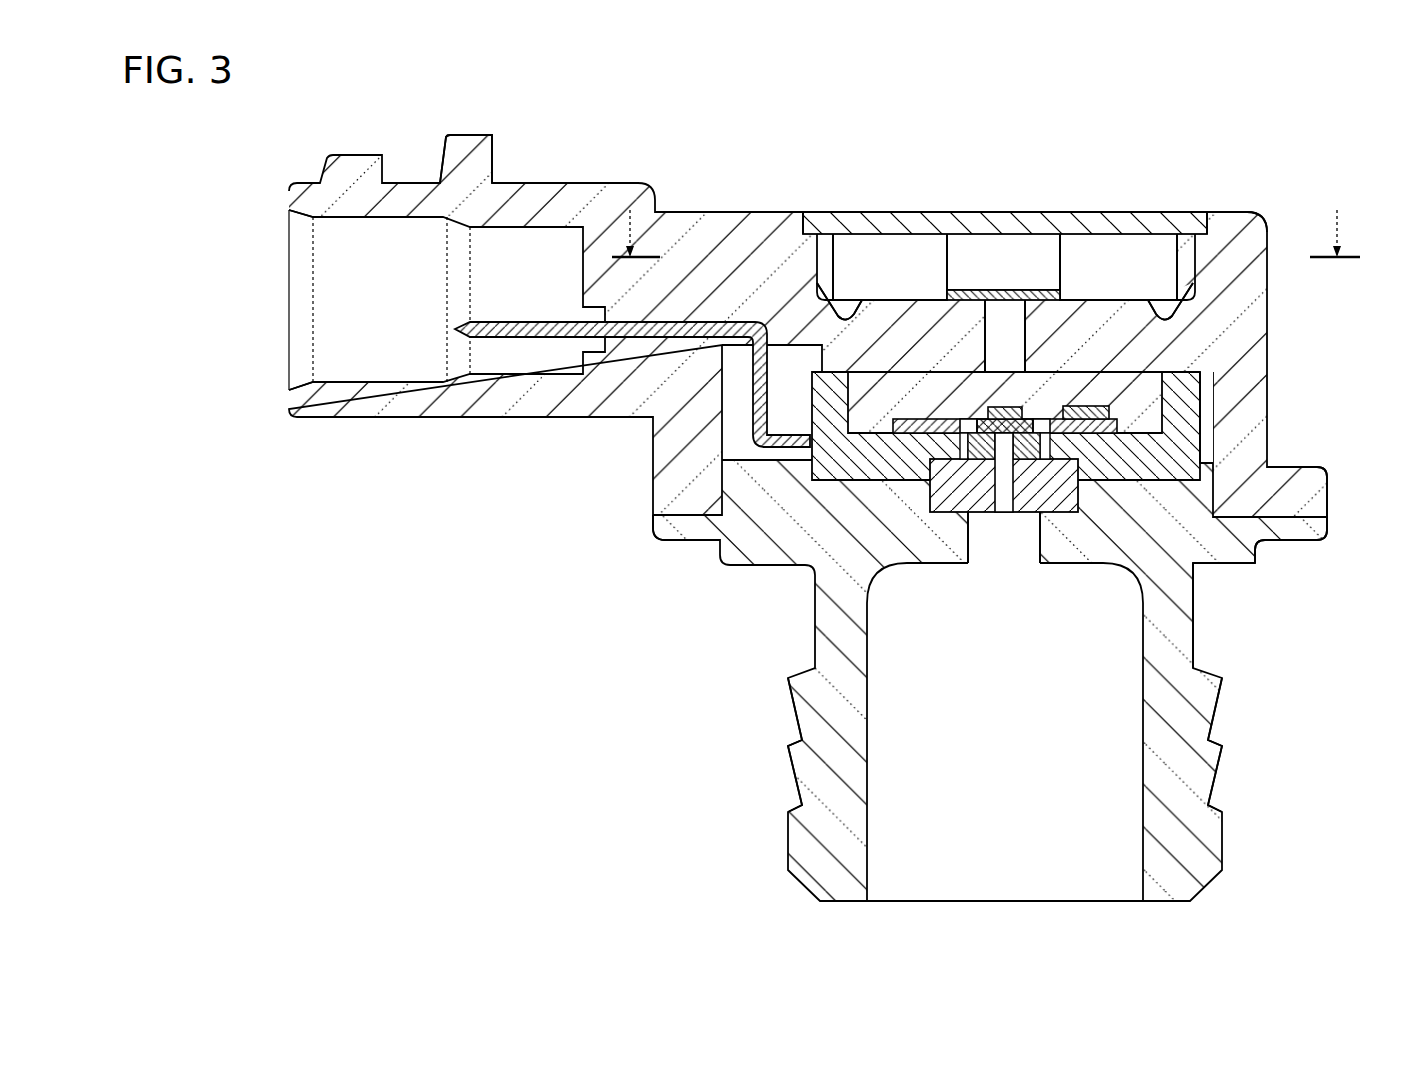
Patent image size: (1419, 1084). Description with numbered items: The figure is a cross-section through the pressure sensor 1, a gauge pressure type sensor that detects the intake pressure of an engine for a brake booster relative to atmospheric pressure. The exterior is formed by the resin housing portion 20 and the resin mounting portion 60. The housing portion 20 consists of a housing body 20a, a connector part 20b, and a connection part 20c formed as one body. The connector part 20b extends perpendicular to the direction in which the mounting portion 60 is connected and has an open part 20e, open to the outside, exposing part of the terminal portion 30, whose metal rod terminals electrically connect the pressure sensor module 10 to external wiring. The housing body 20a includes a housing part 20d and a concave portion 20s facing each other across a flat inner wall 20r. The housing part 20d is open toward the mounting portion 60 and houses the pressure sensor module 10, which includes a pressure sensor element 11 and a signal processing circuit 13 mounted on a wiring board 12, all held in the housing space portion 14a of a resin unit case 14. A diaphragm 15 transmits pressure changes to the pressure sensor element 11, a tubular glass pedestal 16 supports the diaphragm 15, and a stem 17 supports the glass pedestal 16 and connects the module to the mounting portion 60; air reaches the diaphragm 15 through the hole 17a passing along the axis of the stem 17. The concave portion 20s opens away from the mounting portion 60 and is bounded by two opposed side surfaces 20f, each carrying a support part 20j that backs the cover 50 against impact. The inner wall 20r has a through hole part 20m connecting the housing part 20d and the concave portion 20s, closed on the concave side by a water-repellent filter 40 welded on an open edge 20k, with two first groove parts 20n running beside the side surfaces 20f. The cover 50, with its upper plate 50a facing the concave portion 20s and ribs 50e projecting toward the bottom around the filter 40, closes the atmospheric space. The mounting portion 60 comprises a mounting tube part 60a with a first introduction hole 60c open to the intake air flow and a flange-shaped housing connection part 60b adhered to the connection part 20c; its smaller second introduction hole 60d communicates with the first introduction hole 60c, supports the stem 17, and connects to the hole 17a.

The pressure sensor 1 is at (804, 501).
The pressure sensor module 10 is at (1042, 508).
The pressure sensor element 11 is at (1000, 404).
The wiring board 12 is at (912, 418).
The signal processing circuit 13 is at (1087, 406).
The unit case 14 is at (1078, 414).
The housing space portion 14a is at (1206, 400).
The diaphragm 15 is at (1027, 418).
The glass pedestal 16 is at (1195, 573).
The stem 17 is at (909, 527).
The hole 17a is at (1003, 490).
The housing portion 20 is at (804, 279).
The housing body 20a is at (725, 245).
The connector part 20b is at (410, 198).
The connection part 20c is at (1302, 497).
The housing part 20d is at (733, 430).
The open part 20e is at (350, 382).
The side surface 20f is at (805, 235).
The support part 20j is at (1215, 258).
The open edge 20k is at (1128, 262).
The through hole part 20m is at (990, 310).
The first groove part 20n is at (850, 300).
The inner wall 20r is at (1120, 340).
The concave portion 20s is at (1025, 262).
The terminal portion 30 is at (558, 338).
The filter 40 is at (1003, 295).
The cover 50 is at (1005, 197).
The upper plate 50a is at (1172, 228).
The rib 50e is at (890, 262).
The mounting portion 60 is at (1010, 710).
The mounting tube part 60a is at (1185, 773).
The housing connection part 60b is at (1258, 548).
The first introduction hole 60c is at (875, 882).
The second introduction hole 60d is at (1060, 540).